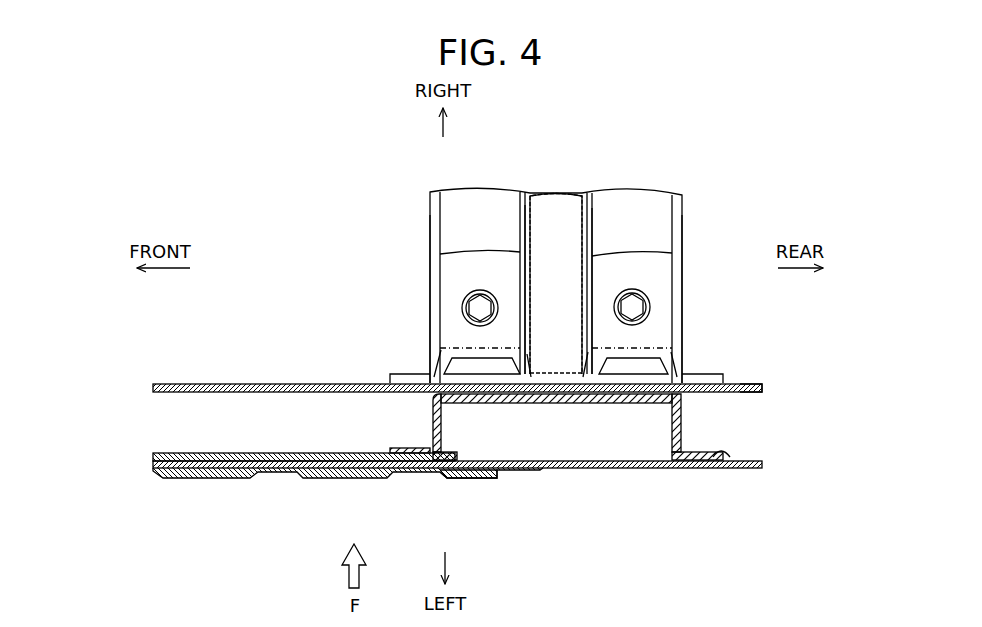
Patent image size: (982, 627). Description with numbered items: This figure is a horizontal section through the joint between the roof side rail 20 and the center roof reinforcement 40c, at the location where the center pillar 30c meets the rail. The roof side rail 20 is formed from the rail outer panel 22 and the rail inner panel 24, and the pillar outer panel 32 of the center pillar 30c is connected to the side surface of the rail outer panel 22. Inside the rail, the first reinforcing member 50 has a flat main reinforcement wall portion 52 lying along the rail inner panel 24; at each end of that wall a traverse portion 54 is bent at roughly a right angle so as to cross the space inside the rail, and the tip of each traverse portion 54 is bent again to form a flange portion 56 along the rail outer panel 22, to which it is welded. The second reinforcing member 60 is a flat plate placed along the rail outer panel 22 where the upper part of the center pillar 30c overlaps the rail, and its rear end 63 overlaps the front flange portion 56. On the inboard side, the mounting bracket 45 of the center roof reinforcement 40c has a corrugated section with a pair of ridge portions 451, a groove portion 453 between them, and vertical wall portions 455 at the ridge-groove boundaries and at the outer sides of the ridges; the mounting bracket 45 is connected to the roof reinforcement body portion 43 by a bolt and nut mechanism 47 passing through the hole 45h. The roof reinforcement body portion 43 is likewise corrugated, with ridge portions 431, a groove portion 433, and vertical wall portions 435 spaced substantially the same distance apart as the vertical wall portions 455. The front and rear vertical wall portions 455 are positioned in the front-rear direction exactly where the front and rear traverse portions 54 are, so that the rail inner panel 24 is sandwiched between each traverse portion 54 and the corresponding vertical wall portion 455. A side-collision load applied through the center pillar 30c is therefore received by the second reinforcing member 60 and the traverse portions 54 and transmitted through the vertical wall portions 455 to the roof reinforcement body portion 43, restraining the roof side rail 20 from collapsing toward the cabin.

The roof side rail 20 is at (243, 380).
The rail outer panel 22 is at (650, 469).
The rail inner panel 24 is at (743, 393).
The center pillar 30c is at (378, 486).
The pillar outer panel 32 is at (348, 513).
The center roof reinforcement 40c is at (562, 238).
The roof reinforcement body portion 43 is at (550, 206).
The ridge portion 431 is at (475, 205).
The groove portion 433 is at (570, 212).
The vertical wall portion 435 is at (430, 215).
The mounting bracket 45 is at (600, 302).
The fastening hole 45h is at (470, 295).
The ridge portion 451 is at (465, 332).
The groove portion 453 is at (548, 262).
The vertical wall portion 455 is at (440, 344).
The bolt & nut mechanism 47 is at (462, 308).
The first reinforcing member 50 is at (574, 457).
The main reinforcement wall portion 52 is at (617, 404).
The traverse portion 54 is at (432, 418).
The flange portion 56 is at (404, 447).
The second reinforcing member 60 is at (286, 450).
The rear end 63 is at (428, 479).